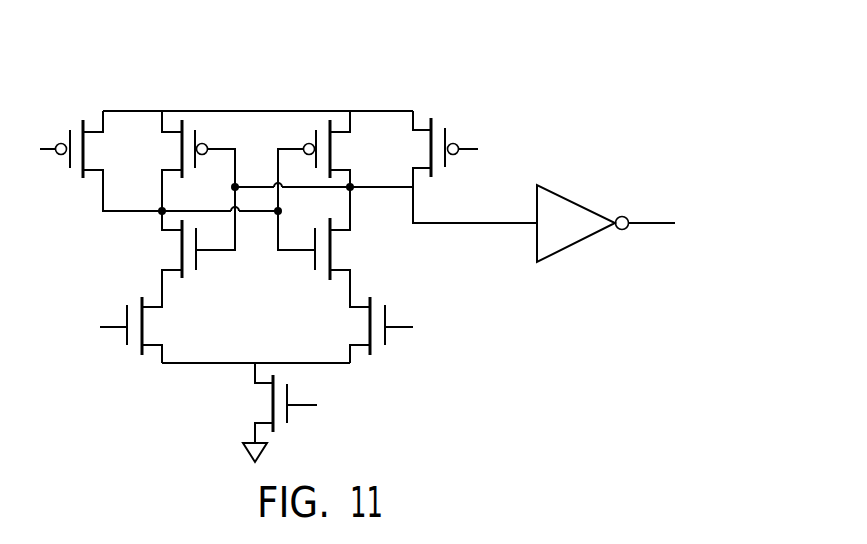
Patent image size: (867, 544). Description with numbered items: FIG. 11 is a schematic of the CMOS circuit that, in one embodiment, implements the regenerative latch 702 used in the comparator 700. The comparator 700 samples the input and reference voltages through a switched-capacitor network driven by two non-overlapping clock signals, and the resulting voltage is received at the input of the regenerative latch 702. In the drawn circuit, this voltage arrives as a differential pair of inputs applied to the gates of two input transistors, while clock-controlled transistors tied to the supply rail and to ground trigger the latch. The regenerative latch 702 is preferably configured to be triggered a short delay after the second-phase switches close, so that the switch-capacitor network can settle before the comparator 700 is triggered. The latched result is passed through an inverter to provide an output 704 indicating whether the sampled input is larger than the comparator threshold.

The regenerative latch 702 is at (430, 73).
The output 704 is at (647, 222).
The comparator 700 is at (575, 260).